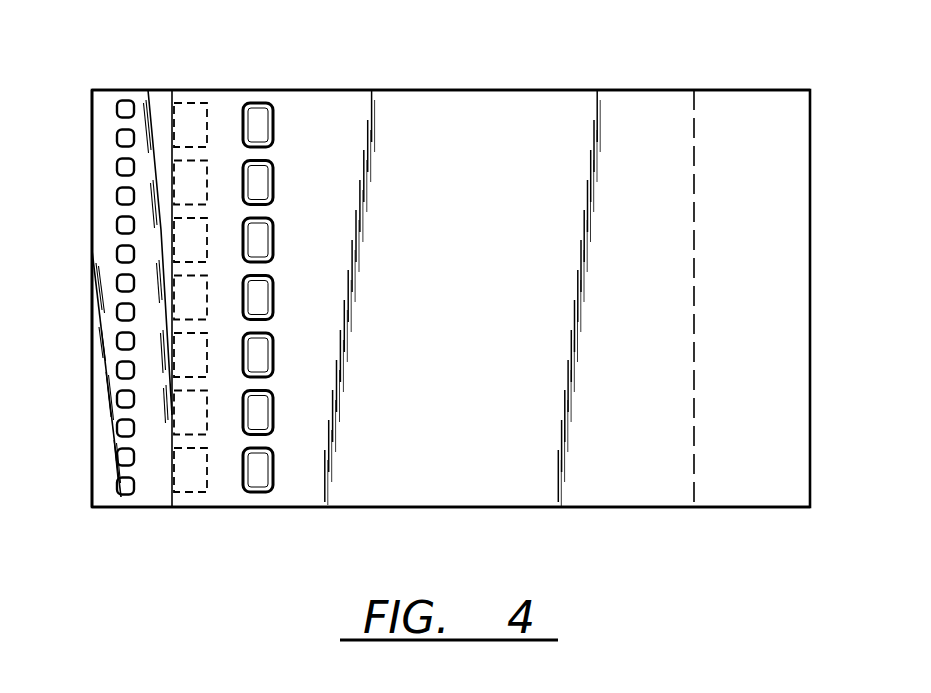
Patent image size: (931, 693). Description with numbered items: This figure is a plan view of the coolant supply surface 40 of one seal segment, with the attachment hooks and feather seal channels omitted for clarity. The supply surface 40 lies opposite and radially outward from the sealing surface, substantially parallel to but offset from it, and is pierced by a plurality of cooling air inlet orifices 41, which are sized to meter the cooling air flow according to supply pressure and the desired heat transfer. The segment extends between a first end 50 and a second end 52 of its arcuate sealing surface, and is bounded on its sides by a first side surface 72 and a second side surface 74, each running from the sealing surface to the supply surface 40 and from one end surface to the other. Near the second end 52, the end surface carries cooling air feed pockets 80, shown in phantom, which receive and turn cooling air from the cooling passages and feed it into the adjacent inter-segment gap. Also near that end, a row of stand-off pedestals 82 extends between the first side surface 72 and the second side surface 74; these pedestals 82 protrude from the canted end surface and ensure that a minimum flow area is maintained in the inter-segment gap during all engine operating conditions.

The coolant supply surface 40 is at (480, 262).
The cooling air inlet orifices 41 is at (273, 356).
The first end 50 is at (815, 436).
The second end 52 is at (90, 347).
The first side surface 72 is at (588, 508).
The second side surface 74 is at (575, 91).
The cooling air feed pockets 80 is at (163, 235).
The stand-off pedestals 82 is at (117, 138).